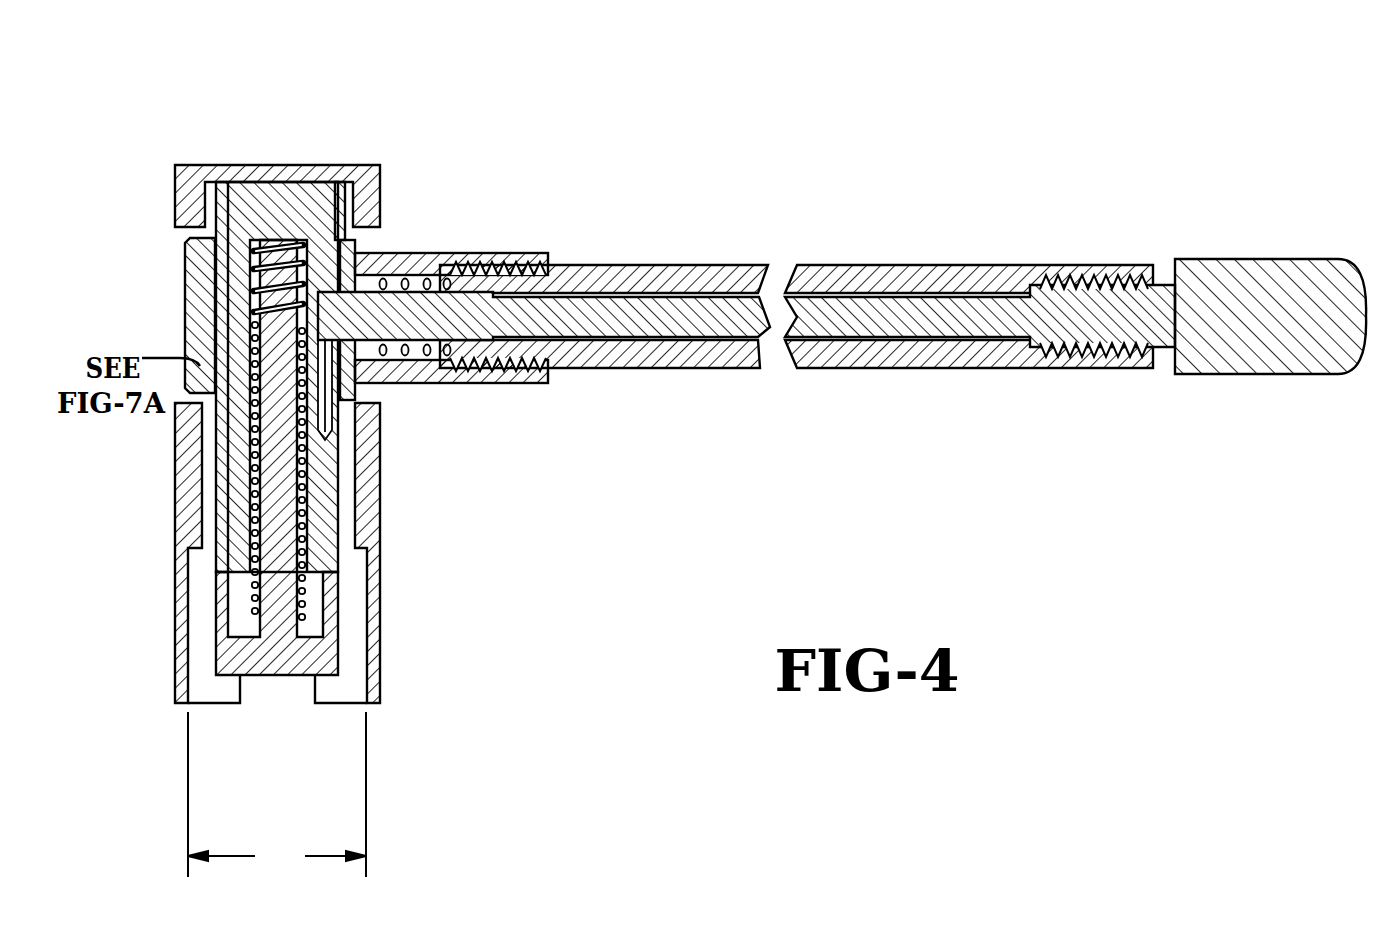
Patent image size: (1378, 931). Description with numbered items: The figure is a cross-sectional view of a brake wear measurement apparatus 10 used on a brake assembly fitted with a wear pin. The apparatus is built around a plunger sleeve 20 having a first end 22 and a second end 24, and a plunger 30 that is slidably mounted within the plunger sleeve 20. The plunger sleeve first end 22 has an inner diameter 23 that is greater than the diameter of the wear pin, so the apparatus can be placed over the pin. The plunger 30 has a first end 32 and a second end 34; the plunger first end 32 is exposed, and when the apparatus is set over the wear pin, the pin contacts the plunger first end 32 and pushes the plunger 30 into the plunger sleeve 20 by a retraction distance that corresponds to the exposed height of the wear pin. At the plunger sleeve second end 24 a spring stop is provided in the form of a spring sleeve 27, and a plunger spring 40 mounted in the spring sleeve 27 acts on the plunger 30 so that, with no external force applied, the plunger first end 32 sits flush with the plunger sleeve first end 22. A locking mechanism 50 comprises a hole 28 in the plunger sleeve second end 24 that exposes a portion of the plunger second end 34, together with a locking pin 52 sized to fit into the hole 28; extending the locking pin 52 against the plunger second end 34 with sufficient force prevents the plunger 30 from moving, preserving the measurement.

The brake wear measurement apparatus 10 is at (887, 174).
The plunger sleeve 20 is at (183, 488).
The plunger sleeve first end 22 is at (186, 700).
The plunger sleeve first end inner diameter 23 is at (277, 794).
The plunger sleeve second end 24 is at (206, 202).
The spring sleeve 27 is at (246, 205).
The hole 28 is at (352, 325).
The plunger 30 is at (290, 645).
The plunger first end 32 is at (270, 664).
The plunger second end 34 is at (226, 258).
The plunger spring 40 is at (272, 265).
The locking mechanism 50 is at (430, 228).
The locking pin 52 is at (342, 305).